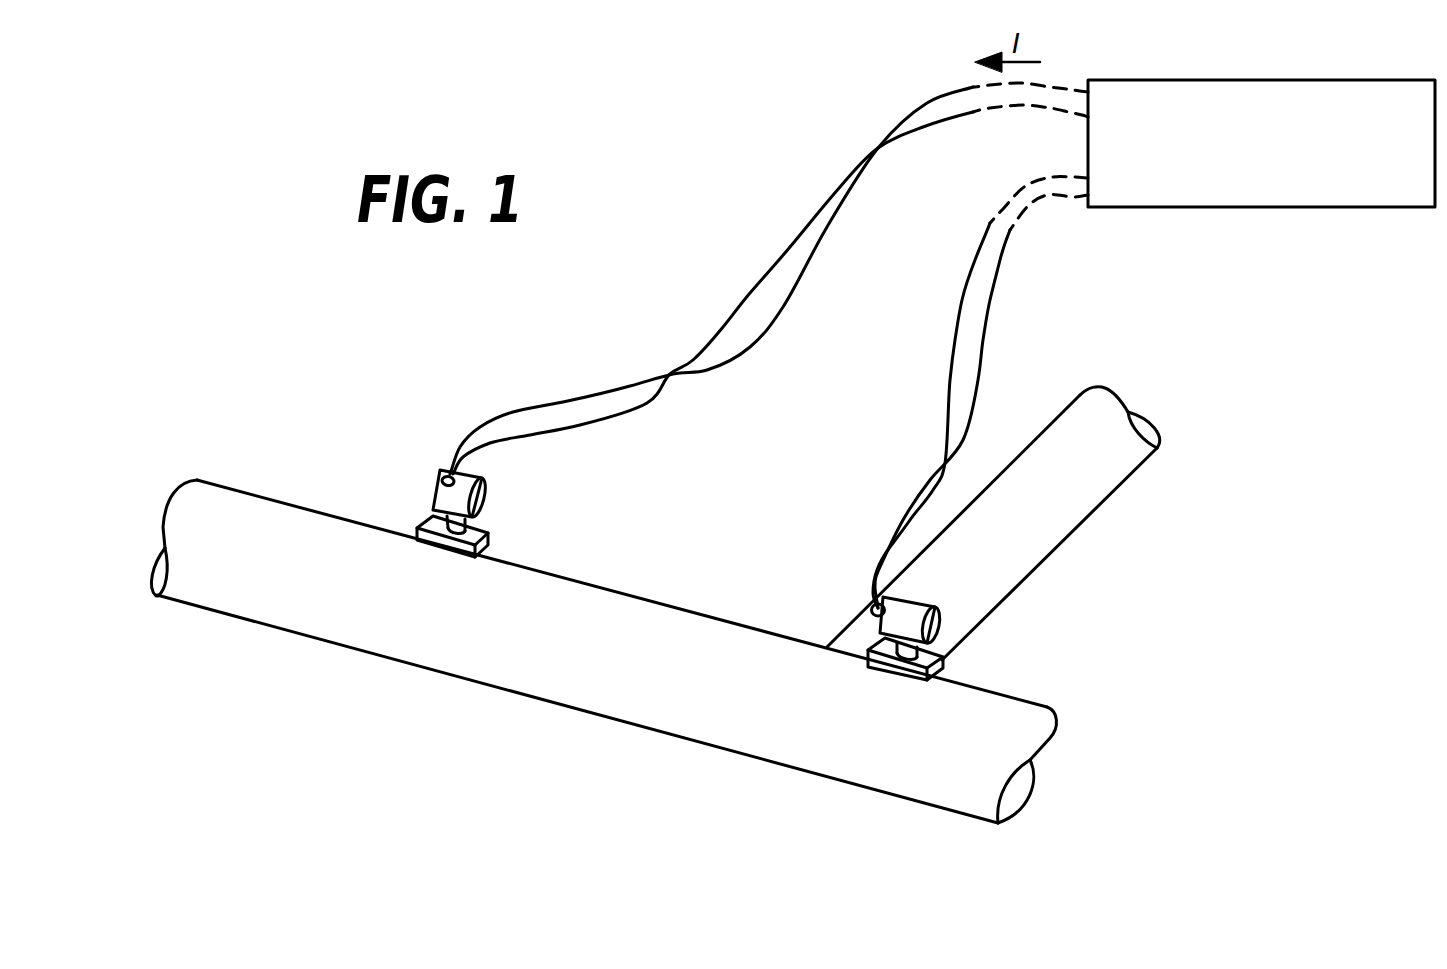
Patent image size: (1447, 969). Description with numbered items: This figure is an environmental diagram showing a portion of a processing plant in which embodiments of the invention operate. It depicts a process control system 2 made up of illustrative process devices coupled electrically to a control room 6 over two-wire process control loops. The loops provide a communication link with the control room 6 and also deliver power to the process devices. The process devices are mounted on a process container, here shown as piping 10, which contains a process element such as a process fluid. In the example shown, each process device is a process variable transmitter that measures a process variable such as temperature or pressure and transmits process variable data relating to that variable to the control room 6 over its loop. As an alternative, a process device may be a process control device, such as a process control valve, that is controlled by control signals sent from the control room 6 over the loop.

The process control system 2 is at (210, 337).
The control room 6 is at (1245, 78).
The piping 10 is at (237, 582).